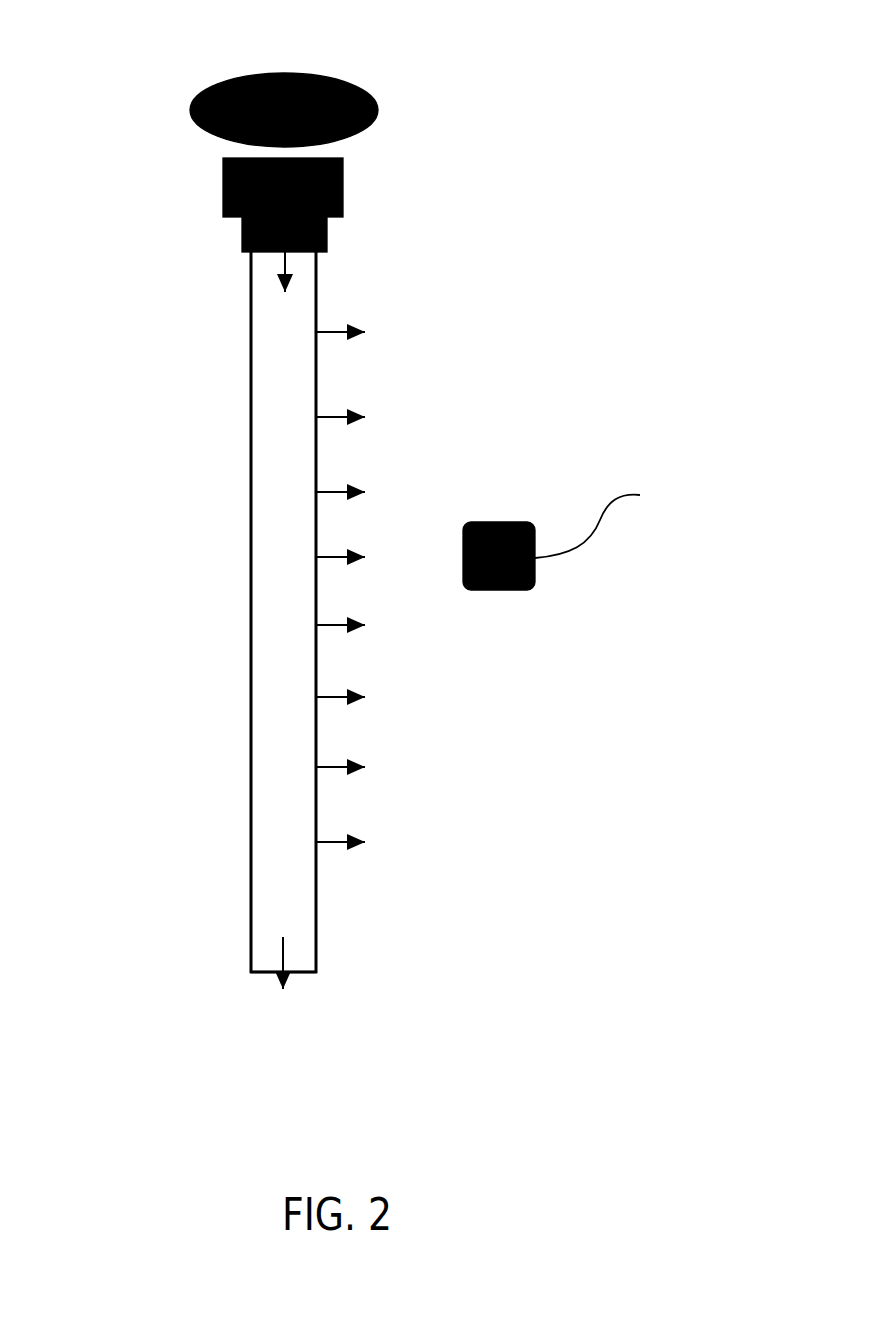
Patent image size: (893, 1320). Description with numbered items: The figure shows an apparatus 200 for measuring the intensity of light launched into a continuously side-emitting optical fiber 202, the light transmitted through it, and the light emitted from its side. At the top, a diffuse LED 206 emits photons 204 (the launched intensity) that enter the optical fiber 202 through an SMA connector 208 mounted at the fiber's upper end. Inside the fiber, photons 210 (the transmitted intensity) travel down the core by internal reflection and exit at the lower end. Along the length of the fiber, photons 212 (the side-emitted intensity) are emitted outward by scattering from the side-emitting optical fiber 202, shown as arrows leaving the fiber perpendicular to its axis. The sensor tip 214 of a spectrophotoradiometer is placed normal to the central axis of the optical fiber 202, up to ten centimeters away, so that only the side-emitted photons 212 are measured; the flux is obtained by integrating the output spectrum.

The apparatus 200 is at (194, 50).
The side-emitting optical fiber 202 is at (307, 392).
The photons 204 is at (287, 280).
The LED 206 is at (370, 93).
The SMA connector 208 is at (305, 188).
The photons 210 is at (285, 958).
The photons 212 is at (380, 690).
The sensor tip 214 is at (495, 540).